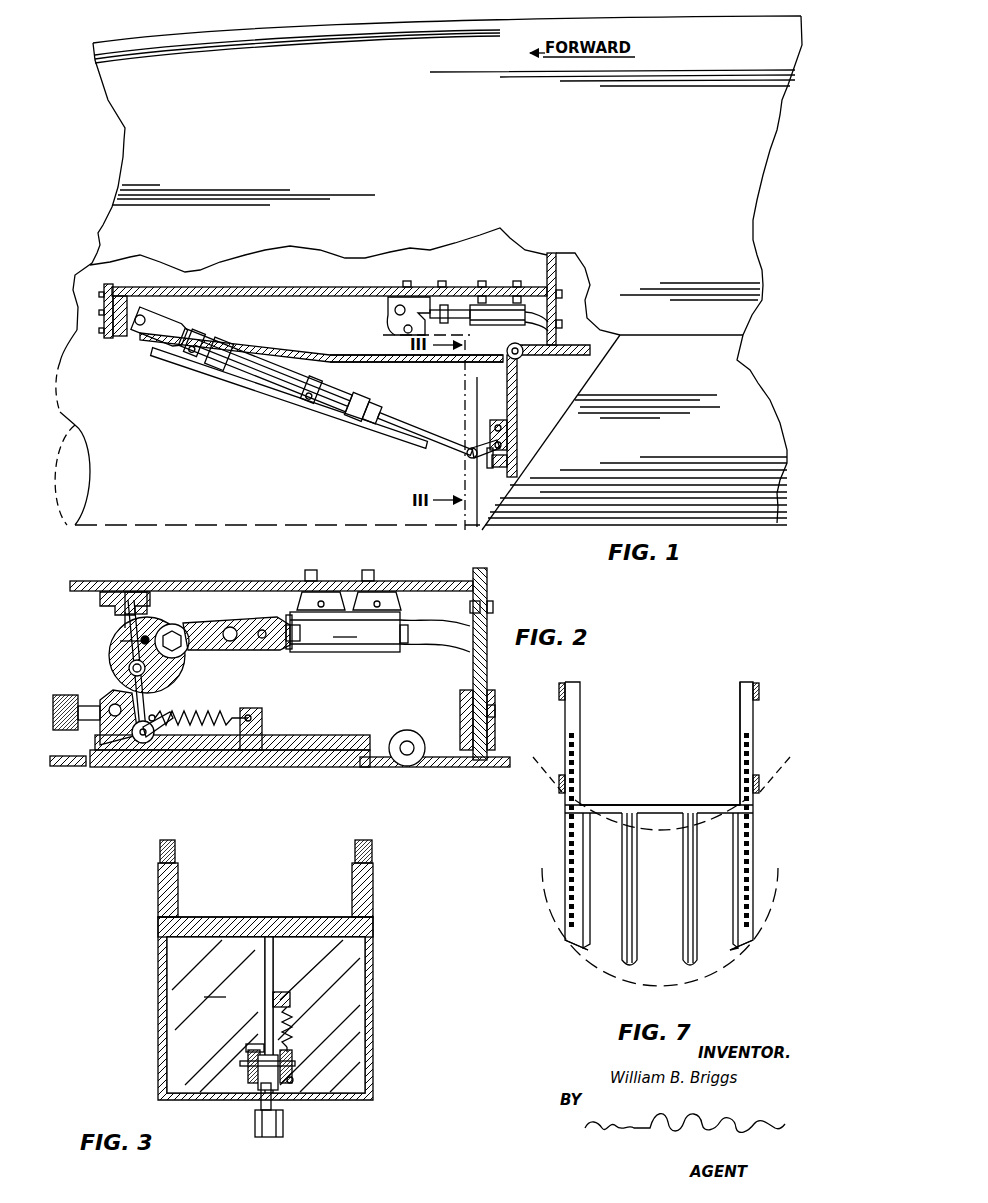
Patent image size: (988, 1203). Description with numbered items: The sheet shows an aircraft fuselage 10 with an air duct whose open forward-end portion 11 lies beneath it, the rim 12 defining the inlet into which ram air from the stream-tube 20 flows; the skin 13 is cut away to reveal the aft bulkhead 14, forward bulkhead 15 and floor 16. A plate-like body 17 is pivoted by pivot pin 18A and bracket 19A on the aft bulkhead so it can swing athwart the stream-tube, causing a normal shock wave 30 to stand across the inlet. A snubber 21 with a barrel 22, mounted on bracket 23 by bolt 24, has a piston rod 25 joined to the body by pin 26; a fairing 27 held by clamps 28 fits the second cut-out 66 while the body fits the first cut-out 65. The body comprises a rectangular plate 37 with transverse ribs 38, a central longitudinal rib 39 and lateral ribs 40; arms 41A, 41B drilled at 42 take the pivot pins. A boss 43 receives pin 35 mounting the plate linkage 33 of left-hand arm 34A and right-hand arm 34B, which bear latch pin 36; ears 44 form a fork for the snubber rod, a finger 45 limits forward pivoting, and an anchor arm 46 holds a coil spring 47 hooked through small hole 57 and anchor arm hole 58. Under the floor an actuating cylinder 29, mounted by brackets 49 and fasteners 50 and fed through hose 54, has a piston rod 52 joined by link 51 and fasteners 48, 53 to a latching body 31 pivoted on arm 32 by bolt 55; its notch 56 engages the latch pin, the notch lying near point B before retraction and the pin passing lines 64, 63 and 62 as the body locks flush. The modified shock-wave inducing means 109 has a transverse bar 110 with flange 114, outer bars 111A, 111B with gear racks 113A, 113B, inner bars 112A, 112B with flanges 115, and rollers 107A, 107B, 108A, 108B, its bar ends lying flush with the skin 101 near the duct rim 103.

In FIG. 1, the fuselage 10 is at (142, 30).
In FIG. 1, the open forward-end portion of the air duct 11 is at (702, 456).
In FIG. 1, the forward edge or rim of the duct 12 is at (583, 397).
In FIG. 1, the external skin 13 is at (498, 194).
In FIG. 2, the external skin 13 is at (460, 767).
In FIG. 1, the aft transverse bulkhead 14 is at (557, 290).
In FIG. 1, the forward transverse bulkhead 15 is at (108, 300).
In FIG. 1, the internal partition or floor 16 is at (217, 288).
In FIG. 2, the internal partition or floor 16 is at (240, 582).
In FIG. 1, the plate-like body 17 is at (519, 414).
In FIG. 2, the plate-like body 17 is at (372, 748).
In FIG. 3, the plate-like body 17 is at (262, 916).
In FIG. 1, the pivot pin 18A is at (519, 358).
In FIG. 1, the bracket 19A is at (507, 351).
In FIG. 1, the stream-tube 20 is at (92, 482).
In FIG. 1, the snubber 21 is at (380, 433).
In FIG. 1, the barrel 22 is at (340, 396).
In FIG. 1, the bracket 23 is at (140, 305).
In FIG. 1, the pivot pin or bolt 24 is at (139, 327).
In FIG. 1, the piston rod 25 is at (425, 443).
In FIG. 3, the piston rod 25 is at (285, 1125).
In FIG. 1, the pivot pin 26 is at (500, 468).
In FIG. 3, the pivot pin 26 is at (261, 1092).
In FIG. 1, the fairing 27 is at (255, 405).
In FIG. 2, the fairing 27 is at (70, 768).
In FIG. 1, the clamp 28 is at (200, 345).
In FIG. 1, the actuating cylinder 29 is at (490, 310).
In FIG. 2, the actuating cylinder 29 is at (343, 632).
In FIG. 1, the normal shock wave 30 is at (470, 527).
In FIG. 1, the latching body 31 is at (396, 328).
In FIG. 2, the latching body 31 is at (165, 626).
In FIG. 1, the bracket or arm 32 is at (415, 305).
In FIG. 2, the bracket or arm 32 is at (120, 600).
In FIG. 1, the plate linkage 33 is at (468, 446).
In FIG. 3, the plate linkage 33 is at (247, 1061).
In FIG. 1, the left-hand arm 34A is at (508, 437).
In FIG. 2, the left-hand arm 34A is at (130, 672).
In FIG. 3, the left-hand arm 34A is at (293, 1073).
In FIG. 3, the right-hand arm 34B is at (258, 1075).
In FIG. 1, the pin 35 is at (508, 462).
In FIG. 2, the pin 35 is at (145, 744).
In FIG. 1, the pin 36 is at (470, 459).
In FIG. 2, the pin 36 is at (150, 640).
In FIG. 3, the pin 36 is at (293, 1080).
In FIG. 3, the rectangular plate 37 is at (216, 1015).
In FIG. 3, the transverse ribs 38 is at (345, 1100).
In FIG. 3, the central longitudinal rib 39 is at (272, 960).
In FIG. 3, the lateral longitudinal ribs 40 is at (158, 995).
In FIG. 3, the arm 41A is at (373, 895).
In FIG. 3, the arm 41B is at (178, 912).
In FIG. 3, the drilled hole 42 is at (355, 851).
In FIG. 3, the boss 43 is at (293, 1040).
In FIG. 3, the ears 44 is at (277, 1090).
In FIG. 3, the finger 45 is at (255, 1052).
In FIG. 3, the anchor arm 46 is at (283, 992).
In FIG. 2, the coil spring 47 is at (240, 748).
In FIG. 3, the coil spring 47 is at (293, 1038).
In FIG. 2, the fastener 48 is at (180, 648).
In FIG. 2, the brackets 49 is at (370, 597).
In FIG. 2, the fasteners 50 is at (325, 597).
In FIG. 2, the link 51 is at (212, 625).
In FIG. 2, the piston rod 52 is at (286, 642).
In FIG. 2, the fastener 53 is at (240, 628).
In FIG. 2, the tube or hose 54 is at (430, 640).
In FIG. 2, the bolt or pin 55 is at (128, 672).
In FIG. 2, the notch 56 is at (138, 641).
In FIG. 2, the small hole 57 is at (160, 735).
In FIG. 2, the anchor arm hole 58 is at (251, 718).
In FIG. 2, the line 62 is at (138, 598).
In FIG. 2, the line 63 is at (131, 598).
In FIG. 2, the line 64 is at (125, 618).
In FIG. 1, the first cut-out 65 is at (447, 363).
In FIG. 1, the second cut-out 66 is at (308, 355).
In FIG. 2, the point B is at (130, 668).
In FIG. 7, the external skin 101 is at (750, 797).
In FIG. 7, the forward-end edge or rim 103 is at (555, 938).
In FIG. 7, the roller 107A is at (760, 690).
In FIG. 7, the roller 107B is at (560, 690).
In FIG. 7, the roller 108A is at (762, 780).
In FIG. 7, the roller 108B is at (560, 793).
In FIG. 7, the shock-wave inducing means 109 is at (738, 768).
In FIG. 7, the transverse bar 110 is at (680, 805).
In FIG. 7, the outer bar 111A is at (740, 842).
In FIG. 7, the outer bar 111B is at (586, 860).
In FIG. 7, the inner bar 112A is at (700, 955).
In FIG. 7, the inner bar 112B is at (620, 960).
In FIG. 7, the gear rack 113A is at (749, 878).
In FIG. 7, the gear rack 113B is at (570, 898).
In FIG. 7, the reinforcing aft-edge flange 114 is at (613, 805).
In FIG. 7, the reinforcing aft-edge flange 115 is at (633, 900).